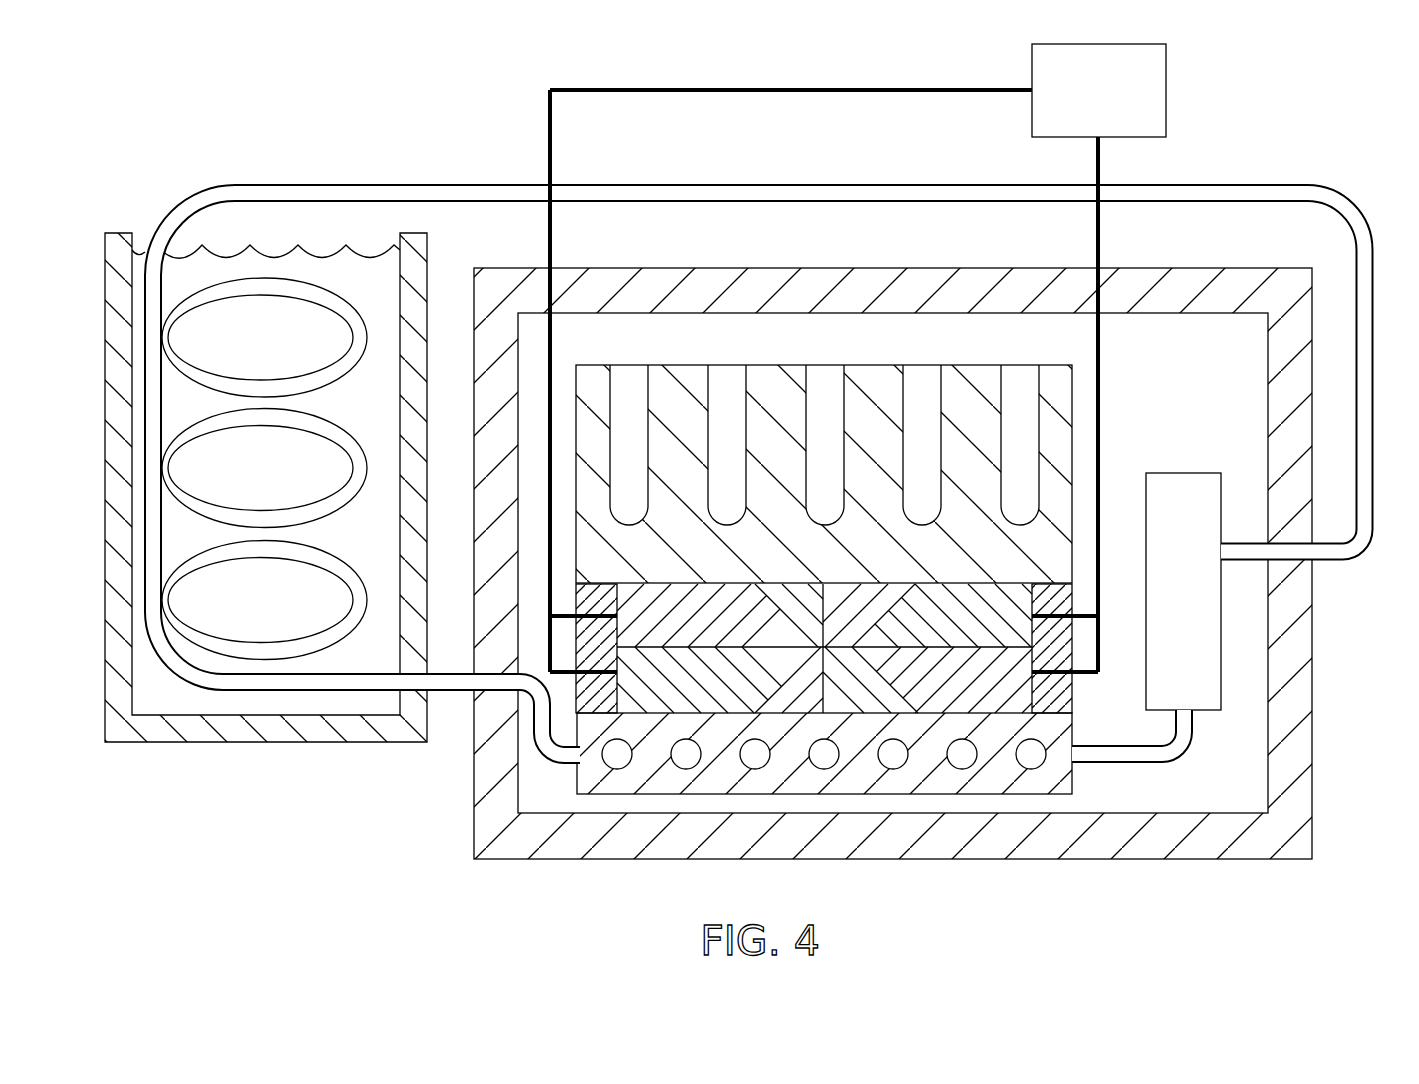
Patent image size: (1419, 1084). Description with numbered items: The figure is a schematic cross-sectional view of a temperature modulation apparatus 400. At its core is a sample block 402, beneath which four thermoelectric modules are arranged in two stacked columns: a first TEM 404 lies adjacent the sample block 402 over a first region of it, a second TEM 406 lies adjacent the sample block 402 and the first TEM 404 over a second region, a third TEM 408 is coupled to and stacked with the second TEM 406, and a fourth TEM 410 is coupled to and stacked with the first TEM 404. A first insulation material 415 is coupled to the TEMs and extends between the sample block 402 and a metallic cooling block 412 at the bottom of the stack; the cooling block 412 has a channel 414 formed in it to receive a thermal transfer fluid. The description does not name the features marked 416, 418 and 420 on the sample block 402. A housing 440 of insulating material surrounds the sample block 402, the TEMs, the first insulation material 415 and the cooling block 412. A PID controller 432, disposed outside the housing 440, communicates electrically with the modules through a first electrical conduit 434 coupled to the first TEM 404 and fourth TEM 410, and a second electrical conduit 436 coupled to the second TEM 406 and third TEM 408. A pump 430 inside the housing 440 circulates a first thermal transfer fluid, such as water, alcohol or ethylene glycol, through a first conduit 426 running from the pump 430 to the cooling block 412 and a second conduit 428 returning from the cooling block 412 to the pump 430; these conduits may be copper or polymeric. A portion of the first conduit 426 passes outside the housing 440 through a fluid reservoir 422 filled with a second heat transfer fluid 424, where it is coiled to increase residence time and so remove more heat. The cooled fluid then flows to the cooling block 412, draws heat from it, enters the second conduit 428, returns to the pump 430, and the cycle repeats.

The temperature modulation apparatus 400 is at (198, 112).
The sample block 402 is at (1066, 447).
The first TEM 404 is at (957, 606).
The second TEM 406 is at (673, 605).
The third TEM 408 is at (776, 668).
The fourth TEM 410 is at (895, 668).
The cooling block 412 is at (932, 780).
The channel 414 is at (745, 768).
The first insulation material 415 is at (1070, 695).
The cooling fins 416 is at (712, 462).
The slot 418 is at (822, 515).
The heat flow 420 is at (885, 373).
The fluid reservoir 422 is at (265, 730).
The second heat transfer fluid 424 is at (282, 483).
The first conduit 426 is at (422, 186).
The second conduit 428 is at (1115, 762).
The pump 430 is at (1167, 604).
The PID controller 432 is at (1078, 101).
The first electrical conduit 434 is at (1100, 335).
The second electrical conduit 436 is at (550, 232).
The housing 440 is at (1313, 733).